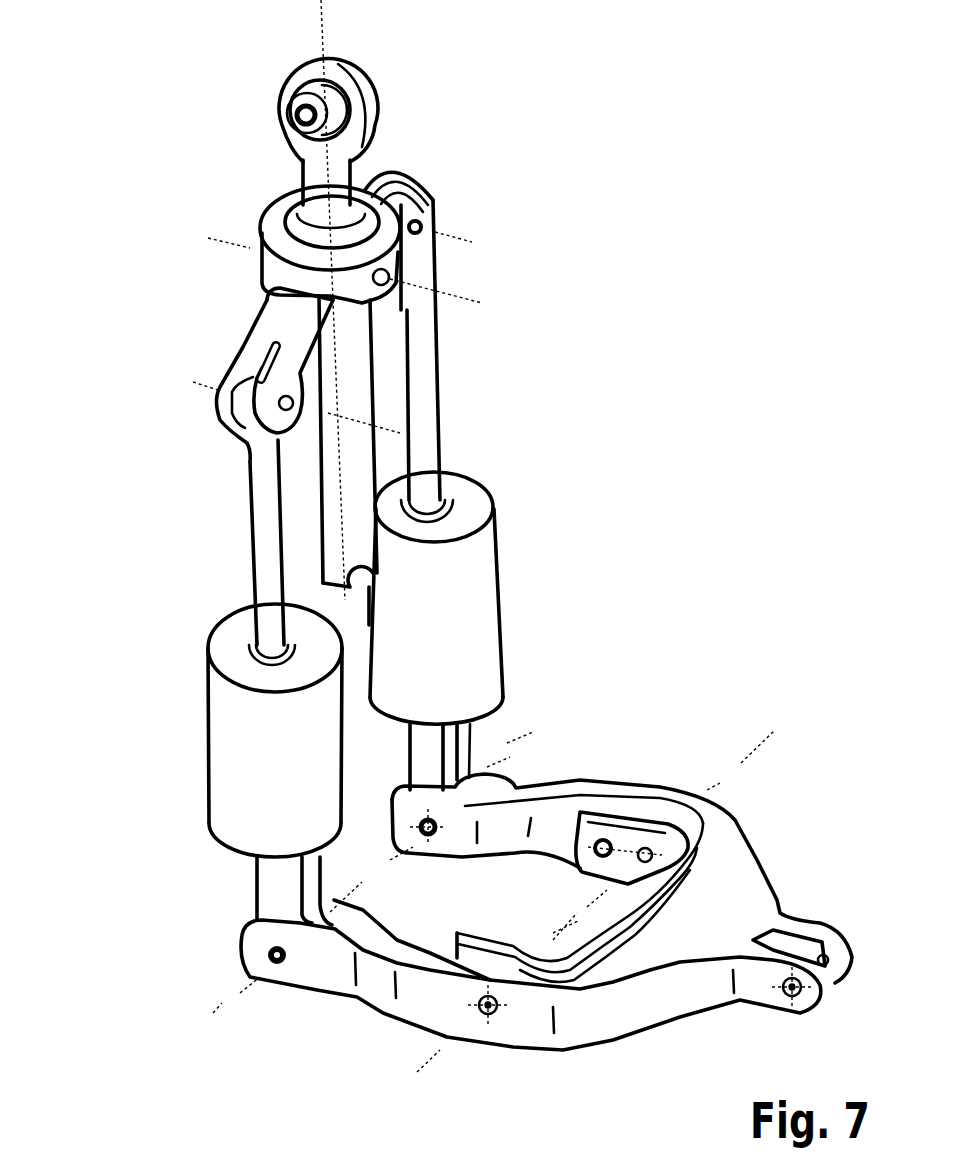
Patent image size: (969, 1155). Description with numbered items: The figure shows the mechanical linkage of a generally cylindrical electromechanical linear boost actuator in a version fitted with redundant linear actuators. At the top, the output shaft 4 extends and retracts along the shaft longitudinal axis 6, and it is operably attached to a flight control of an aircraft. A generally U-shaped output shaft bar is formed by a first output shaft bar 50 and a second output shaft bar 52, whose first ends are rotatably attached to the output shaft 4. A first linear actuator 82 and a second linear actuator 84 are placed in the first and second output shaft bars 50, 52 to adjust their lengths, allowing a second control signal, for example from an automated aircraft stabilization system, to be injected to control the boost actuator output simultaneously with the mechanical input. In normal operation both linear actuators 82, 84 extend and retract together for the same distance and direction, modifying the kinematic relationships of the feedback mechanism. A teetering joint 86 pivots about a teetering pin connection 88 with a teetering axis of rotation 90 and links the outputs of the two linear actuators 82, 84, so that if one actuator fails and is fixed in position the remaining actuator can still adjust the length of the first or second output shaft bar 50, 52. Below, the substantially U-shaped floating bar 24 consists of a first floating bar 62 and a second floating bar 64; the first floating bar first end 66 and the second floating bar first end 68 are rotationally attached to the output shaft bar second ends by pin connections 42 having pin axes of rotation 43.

The shaft longitudinal axis 6 is at (318, 39).
The output shaft 4 is at (352, 108).
The pin connections 42 is at (423, 221).
The pin axes of rotation 43 is at (460, 237).
The teetering axis of rotation 90 is at (457, 288).
The teetering pin connection 88 is at (392, 283).
The teetering joint 86 is at (280, 317).
The first output shaft bar 50 is at (428, 478).
The second output shaft bar 52 is at (270, 595).
The first linear actuator 82 is at (443, 570).
The second linear actuator 84 is at (242, 728).
The first floating bar 62 is at (567, 813).
The second floating bar 64 is at (380, 993).
The first floating bar first end 66 is at (503, 847).
The second floating bar first end 68 is at (363, 908).
The floating bar 24 is at (613, 1007).